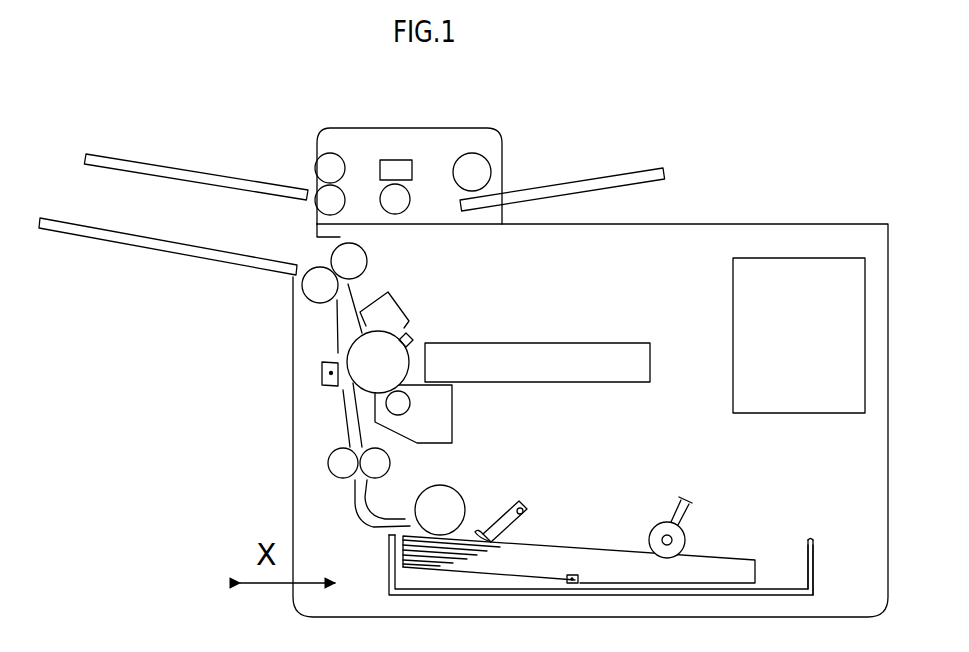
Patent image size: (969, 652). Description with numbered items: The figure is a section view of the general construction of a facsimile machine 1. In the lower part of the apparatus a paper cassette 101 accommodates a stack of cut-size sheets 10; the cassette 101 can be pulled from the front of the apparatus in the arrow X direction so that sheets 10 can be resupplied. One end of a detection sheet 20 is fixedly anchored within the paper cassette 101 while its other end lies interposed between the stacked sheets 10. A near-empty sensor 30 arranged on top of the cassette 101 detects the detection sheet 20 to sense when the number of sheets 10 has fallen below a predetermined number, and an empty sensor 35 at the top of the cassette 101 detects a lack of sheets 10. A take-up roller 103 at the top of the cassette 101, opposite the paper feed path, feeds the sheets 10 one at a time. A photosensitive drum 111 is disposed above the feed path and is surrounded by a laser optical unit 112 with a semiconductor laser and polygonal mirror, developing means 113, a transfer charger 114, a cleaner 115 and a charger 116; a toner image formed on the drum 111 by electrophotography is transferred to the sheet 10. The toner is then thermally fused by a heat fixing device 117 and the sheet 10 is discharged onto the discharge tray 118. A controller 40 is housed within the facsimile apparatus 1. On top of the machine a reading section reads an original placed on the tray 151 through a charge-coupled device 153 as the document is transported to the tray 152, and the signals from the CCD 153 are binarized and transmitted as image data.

The facsimile machine 1 is at (208, 375).
The sheets 10 is at (553, 550).
The detection sheet 20 is at (760, 588).
The near-empty sensor 30 is at (719, 503).
The empty sensor 35 is at (542, 504).
The controller 40 is at (783, 258).
The paper cassette 101 is at (815, 552).
The take-up roller 103 is at (462, 495).
The photosensitive drum 111 is at (410, 350).
The laser optical unit 112 is at (650, 358).
The developing means 113 is at (452, 412).
The transfer charger 114 is at (322, 375).
The cleaner 115 is at (397, 297).
The charger 116 is at (413, 336).
The heat fixing device 117 is at (372, 257).
The discharge tray 118 is at (150, 250).
The tray 151 is at (620, 171).
The tray 152 is at (194, 167).
The charge-coupled device (CCD) 153 is at (397, 160).